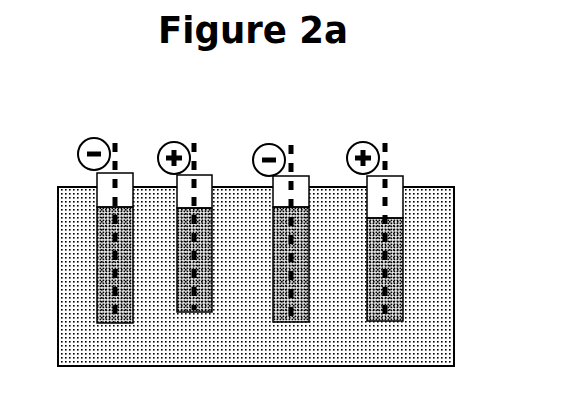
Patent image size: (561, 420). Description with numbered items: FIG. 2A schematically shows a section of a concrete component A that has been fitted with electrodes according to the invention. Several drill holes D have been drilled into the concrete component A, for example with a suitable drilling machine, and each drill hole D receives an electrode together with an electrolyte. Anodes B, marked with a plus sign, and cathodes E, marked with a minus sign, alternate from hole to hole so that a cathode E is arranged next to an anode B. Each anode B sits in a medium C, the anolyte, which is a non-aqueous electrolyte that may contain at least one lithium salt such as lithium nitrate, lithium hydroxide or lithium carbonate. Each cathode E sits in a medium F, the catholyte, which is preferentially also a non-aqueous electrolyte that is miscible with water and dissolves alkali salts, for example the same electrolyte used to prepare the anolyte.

The concrete component A is at (256, 276).
The anode B is at (280, 139).
The medium (anolyte) C is at (280, 248).
The drill hole D is at (252, 251).
The cathode E is at (190, 140).
The medium (catholyte) F is at (199, 248).